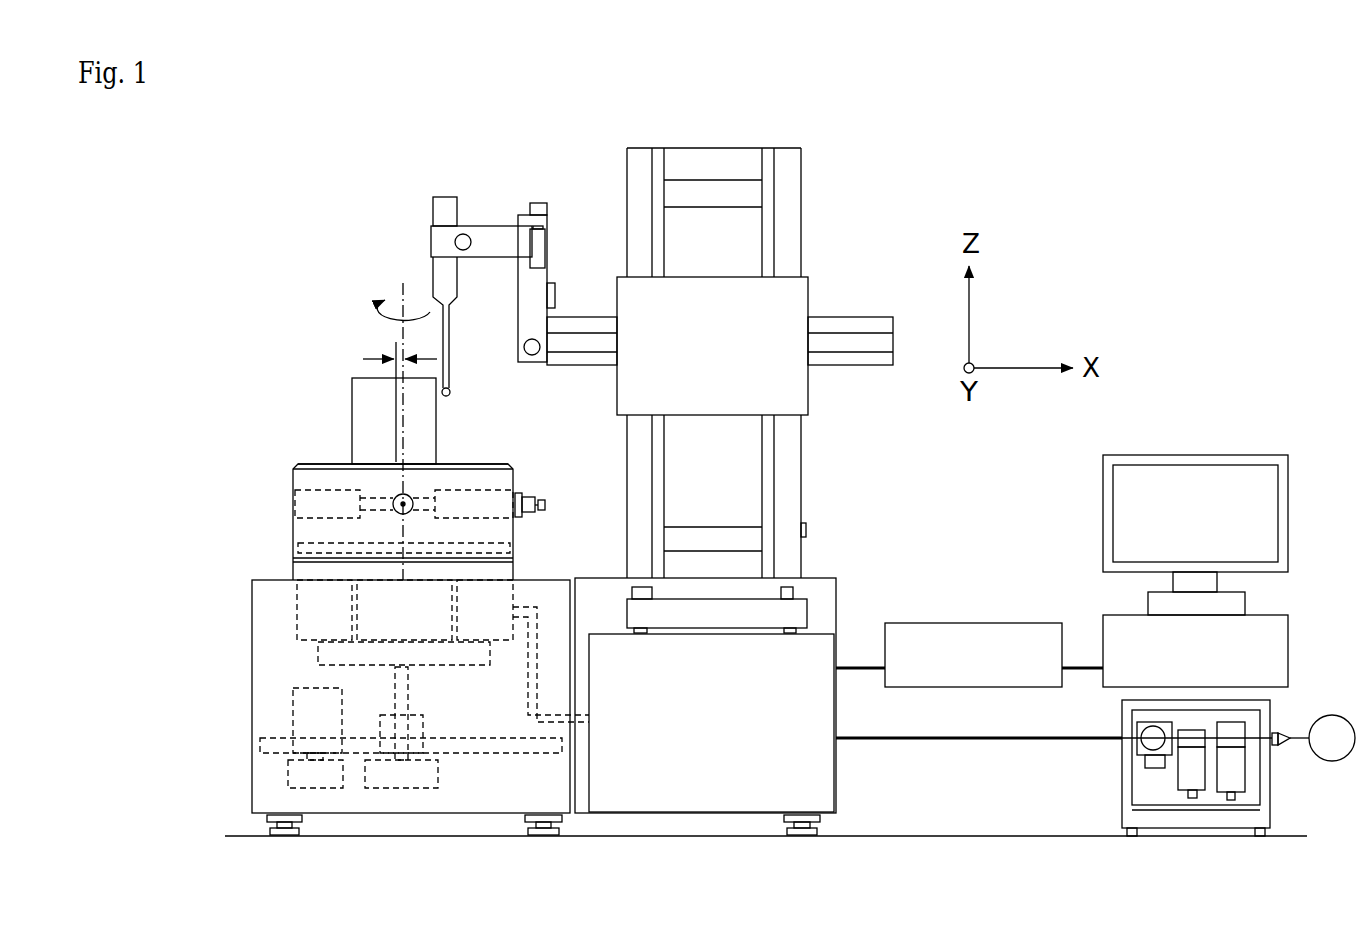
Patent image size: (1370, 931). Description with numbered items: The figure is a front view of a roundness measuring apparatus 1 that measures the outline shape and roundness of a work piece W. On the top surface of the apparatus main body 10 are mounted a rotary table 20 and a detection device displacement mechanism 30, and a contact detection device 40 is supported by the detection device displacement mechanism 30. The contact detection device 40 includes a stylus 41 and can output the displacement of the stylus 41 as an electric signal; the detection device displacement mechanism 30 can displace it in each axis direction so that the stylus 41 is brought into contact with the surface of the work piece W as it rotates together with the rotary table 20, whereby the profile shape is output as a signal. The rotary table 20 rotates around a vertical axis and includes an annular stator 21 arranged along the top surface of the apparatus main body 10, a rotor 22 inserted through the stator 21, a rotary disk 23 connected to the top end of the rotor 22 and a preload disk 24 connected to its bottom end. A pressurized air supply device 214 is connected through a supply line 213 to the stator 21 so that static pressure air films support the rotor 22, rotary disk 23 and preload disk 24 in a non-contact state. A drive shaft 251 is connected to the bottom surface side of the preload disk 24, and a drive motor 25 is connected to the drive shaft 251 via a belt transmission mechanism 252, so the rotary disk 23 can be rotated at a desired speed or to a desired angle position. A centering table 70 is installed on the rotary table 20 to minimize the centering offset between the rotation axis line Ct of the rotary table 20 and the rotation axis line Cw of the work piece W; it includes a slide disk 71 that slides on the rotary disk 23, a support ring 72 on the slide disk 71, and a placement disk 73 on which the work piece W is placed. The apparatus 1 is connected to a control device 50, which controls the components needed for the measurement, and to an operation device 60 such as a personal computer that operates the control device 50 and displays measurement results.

The roundness measuring apparatus 1 is at (1020, 176).
The apparatus main body 10 is at (845, 566).
The rotary table 20 is at (220, 524).
The stator 21 is at (310, 598).
The rotor 22 is at (372, 617).
The rotary disk 23 is at (305, 572).
The preload disk 24 is at (320, 650).
The drive motor 25 is at (305, 700).
The drive shaft 251 is at (405, 695).
The belt transmission mechanism 252 is at (300, 772).
The supply line 213 is at (528, 672).
The pressurized air supply device 214 is at (1122, 782).
The detection device displacement mechanism 30 is at (624, 208).
The contact detection device 40 is at (463, 197).
The stylus 41 is at (452, 388).
The control device 50 is at (965, 623).
The operation device 60 is at (1118, 613).
The centering table 70 is at (285, 474).
The slide disk 71 is at (490, 548).
The support ring 72 is at (525, 493).
The placement disk 73 is at (510, 462).
The work piece W is at (352, 400).
The rotation axis line of the rotary table Ct is at (403, 283).
The rotation axis line of the work piece Cw is at (396, 342).